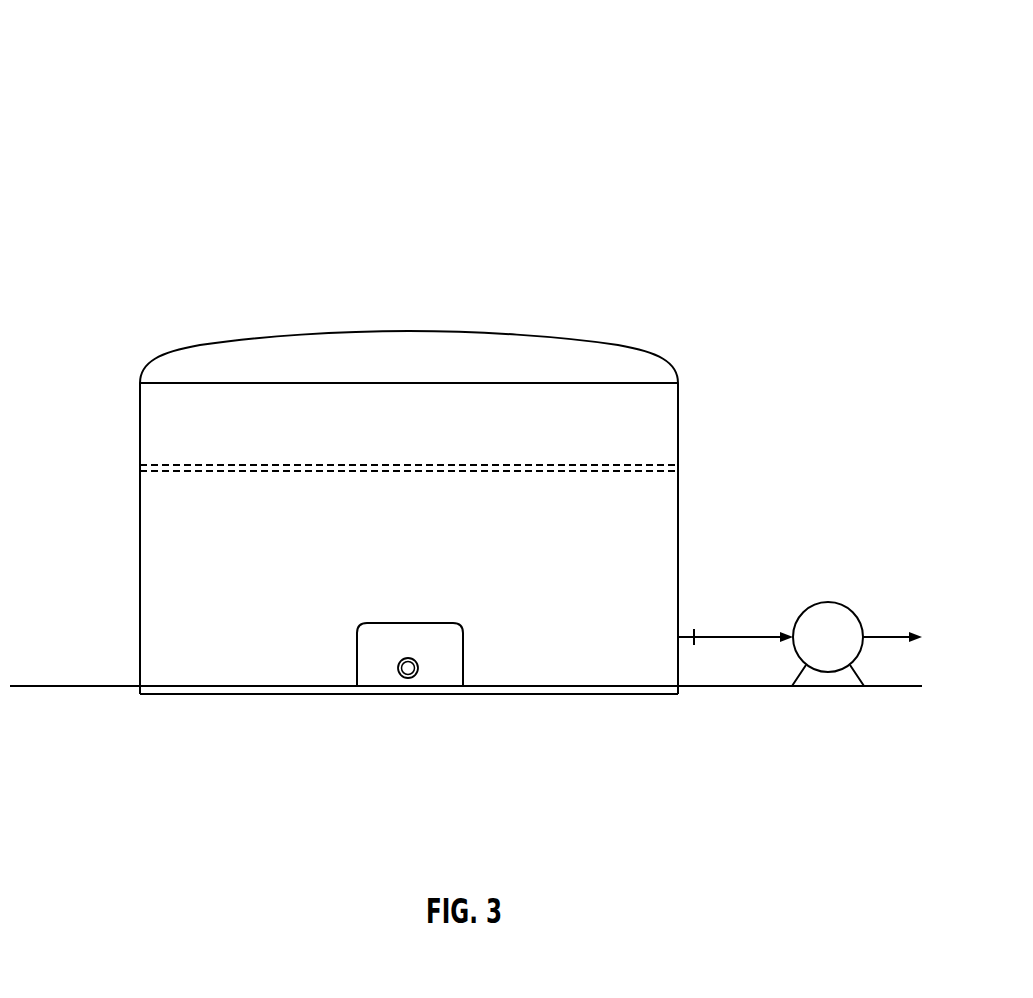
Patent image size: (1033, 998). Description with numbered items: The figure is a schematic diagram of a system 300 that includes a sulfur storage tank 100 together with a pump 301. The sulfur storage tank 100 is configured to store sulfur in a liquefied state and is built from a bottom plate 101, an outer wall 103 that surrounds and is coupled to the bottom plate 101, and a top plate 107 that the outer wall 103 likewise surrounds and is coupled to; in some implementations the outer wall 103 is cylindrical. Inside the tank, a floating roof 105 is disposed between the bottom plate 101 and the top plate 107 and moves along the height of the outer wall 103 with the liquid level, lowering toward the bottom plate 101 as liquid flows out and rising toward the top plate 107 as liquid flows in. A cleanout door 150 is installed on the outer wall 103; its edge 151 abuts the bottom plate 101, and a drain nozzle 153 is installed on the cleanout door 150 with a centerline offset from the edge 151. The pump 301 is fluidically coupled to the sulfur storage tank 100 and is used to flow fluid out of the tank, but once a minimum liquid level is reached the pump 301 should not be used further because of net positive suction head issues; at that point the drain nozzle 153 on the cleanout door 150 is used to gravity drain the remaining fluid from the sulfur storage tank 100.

The system 300 is at (699, 124).
The sulfur storage tank 100 is at (647, 300).
The bottom plate 101 is at (198, 694).
The outer wall 103 is at (140, 625).
The floating roof 105 is at (140, 469).
The top plate 107 is at (303, 333).
The cleanout door 150 is at (463, 647).
The edge 151 is at (443, 694).
The drain nozzle 153 is at (395, 668).
The pump 301 is at (835, 568).